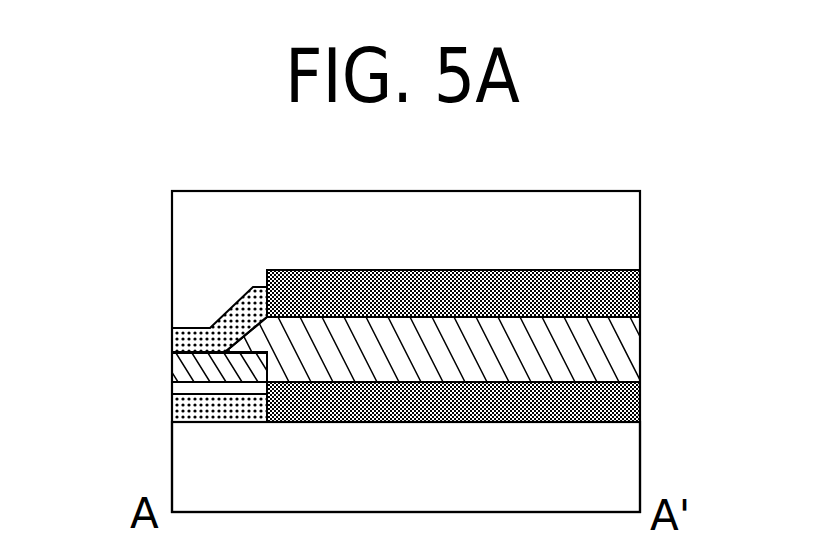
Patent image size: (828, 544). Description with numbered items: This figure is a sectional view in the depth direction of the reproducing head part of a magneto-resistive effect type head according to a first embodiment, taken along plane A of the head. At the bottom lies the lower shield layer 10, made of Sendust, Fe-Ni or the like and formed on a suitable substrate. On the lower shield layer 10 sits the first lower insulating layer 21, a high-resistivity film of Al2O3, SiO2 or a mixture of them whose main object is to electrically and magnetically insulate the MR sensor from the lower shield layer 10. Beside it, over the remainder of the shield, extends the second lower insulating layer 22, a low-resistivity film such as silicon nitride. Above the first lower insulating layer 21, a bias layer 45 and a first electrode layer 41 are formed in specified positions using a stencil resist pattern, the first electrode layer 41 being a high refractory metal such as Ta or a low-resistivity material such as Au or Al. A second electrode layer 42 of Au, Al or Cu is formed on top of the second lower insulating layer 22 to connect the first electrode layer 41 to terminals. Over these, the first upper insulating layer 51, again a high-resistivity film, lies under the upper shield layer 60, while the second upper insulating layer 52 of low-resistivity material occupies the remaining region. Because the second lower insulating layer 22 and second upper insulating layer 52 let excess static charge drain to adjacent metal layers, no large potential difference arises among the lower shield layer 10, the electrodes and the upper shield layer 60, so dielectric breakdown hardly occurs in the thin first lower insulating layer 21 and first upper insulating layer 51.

The lower shield layer 10 is at (192, 453).
The first lower insulating layer 21 is at (175, 399).
The second lower insulating layer 22 is at (638, 405).
The first electrode layer 41 is at (180, 359).
The second electrode layer 42 is at (627, 353).
The bias layer 45 is at (187, 387).
The first upper insulating layer 51 is at (195, 330).
The second upper insulating layer 52 is at (623, 295).
The upper shield layer 60 is at (190, 237).